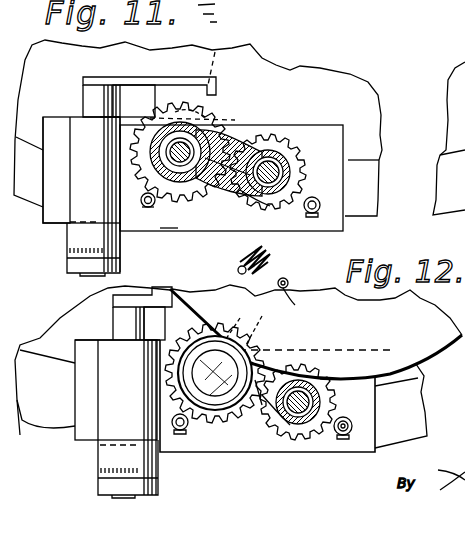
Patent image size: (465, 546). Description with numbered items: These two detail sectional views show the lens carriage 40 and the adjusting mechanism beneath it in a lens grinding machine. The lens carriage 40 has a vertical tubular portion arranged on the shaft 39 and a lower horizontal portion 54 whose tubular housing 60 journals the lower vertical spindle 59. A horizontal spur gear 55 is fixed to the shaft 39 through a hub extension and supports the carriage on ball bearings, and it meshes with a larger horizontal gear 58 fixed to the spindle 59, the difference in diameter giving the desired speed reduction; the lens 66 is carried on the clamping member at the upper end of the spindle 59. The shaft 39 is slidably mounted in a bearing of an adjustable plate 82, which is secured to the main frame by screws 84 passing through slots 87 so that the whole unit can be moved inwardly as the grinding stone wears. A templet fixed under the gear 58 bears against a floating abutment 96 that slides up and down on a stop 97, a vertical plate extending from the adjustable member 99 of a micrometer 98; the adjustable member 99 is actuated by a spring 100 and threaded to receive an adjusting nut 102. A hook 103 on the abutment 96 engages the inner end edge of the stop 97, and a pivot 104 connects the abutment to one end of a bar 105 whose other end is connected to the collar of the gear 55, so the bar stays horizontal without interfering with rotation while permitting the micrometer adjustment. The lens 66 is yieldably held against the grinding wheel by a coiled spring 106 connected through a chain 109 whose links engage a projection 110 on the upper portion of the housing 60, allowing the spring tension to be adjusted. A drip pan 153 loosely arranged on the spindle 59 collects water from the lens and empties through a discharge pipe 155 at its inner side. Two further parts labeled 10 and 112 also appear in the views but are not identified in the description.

In FIG. 12, the sector housing 10 is at (388, 322).
In FIG. 11, the shaft 39 is at (267, 136).
In FIG. 12, the shaft 39 is at (298, 425).
In FIG. 11, the lens carriage 40 is at (178, 228).
In FIG. 12, the lens carriage 40 is at (262, 405).
In FIG. 11, the lower horizontal portion 54 is at (236, 128).
In FIG. 11, the horizontal spur gear 55 is at (300, 160).
In FIG. 12, the horizontal spur gear 55 is at (312, 428).
In FIG. 11, the horizontal gear 58 is at (178, 100).
In FIG. 12, the horizontal gear 58 is at (180, 340).
In FIG. 11, the lower vertical spindle 59 is at (167, 163).
In FIG. 11, the housing 60 is at (125, 152).
In FIG. 12, the lens 66 is at (177, 383).
In FIG. 11, the adjustable plate 82 is at (214, 231).
In FIG. 12, the adjustable plate 82 is at (218, 452).
In FIG. 11, the screws 84 is at (340, 226).
In FIG. 12, the screws 84 is at (172, 424).
In FIG. 11, the slots 87 is at (312, 198).
In FIG. 12, the slots 87 is at (180, 432).
In FIG. 11, the floating abutment 96 is at (152, 93).
In FIG. 11, the stop 97 is at (138, 80).
In FIG. 12, the stop 97 is at (153, 290).
In FIG. 11, the micrometer 98 is at (70, 233).
In FIG. 12, the micrometer 98 is at (110, 447).
In FIG. 11, the adjustable member 99 is at (83, 85).
In FIG. 12, the adjustable member 99 is at (116, 318).
In FIG. 11, the spring 100 is at (455, 230).
In FIG. 11, the adjusting nut 102 is at (70, 258).
In FIG. 12, the adjusting nut 102 is at (100, 480).
In FIG. 11, the hook 103 is at (240, 62).
In FIG. 11, the pivot 104 is at (232, 38).
In FIG. 11, the bar 105 is at (258, 138).
In FIG. 12, the coiled spring 106 is at (286, 279).
In FIG. 12, the chain 109 is at (240, 270).
In FIG. 12, the projection 110 is at (144, 372).
In FIG. 11, the arm 112 is at (382, 6).
In FIG. 12, the drip pan 153 is at (192, 402).
In FIG. 12, the discharge pipe 155 is at (305, 292).